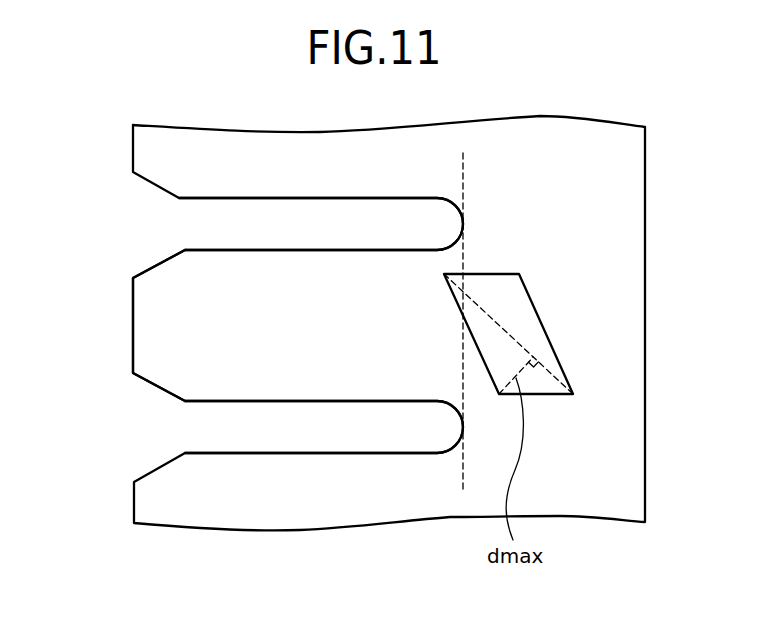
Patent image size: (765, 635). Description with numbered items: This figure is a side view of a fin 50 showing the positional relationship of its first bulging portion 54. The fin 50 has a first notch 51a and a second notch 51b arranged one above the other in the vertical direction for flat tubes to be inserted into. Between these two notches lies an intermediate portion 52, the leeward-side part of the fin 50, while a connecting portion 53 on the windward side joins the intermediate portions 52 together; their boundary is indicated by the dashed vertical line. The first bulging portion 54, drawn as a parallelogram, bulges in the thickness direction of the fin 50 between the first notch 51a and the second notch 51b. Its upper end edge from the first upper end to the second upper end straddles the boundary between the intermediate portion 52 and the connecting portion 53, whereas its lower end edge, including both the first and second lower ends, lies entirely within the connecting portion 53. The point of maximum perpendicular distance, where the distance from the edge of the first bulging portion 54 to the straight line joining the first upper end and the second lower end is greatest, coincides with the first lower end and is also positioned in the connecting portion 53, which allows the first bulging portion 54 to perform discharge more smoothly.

The fin 50 is at (645, 275).
The first notch 51a is at (198, 223).
The second notch 51b is at (198, 427).
The intermediate portion 52 is at (208, 326).
The connecting portion 53 is at (615, 378).
The first bulging portion 54 is at (520, 327).